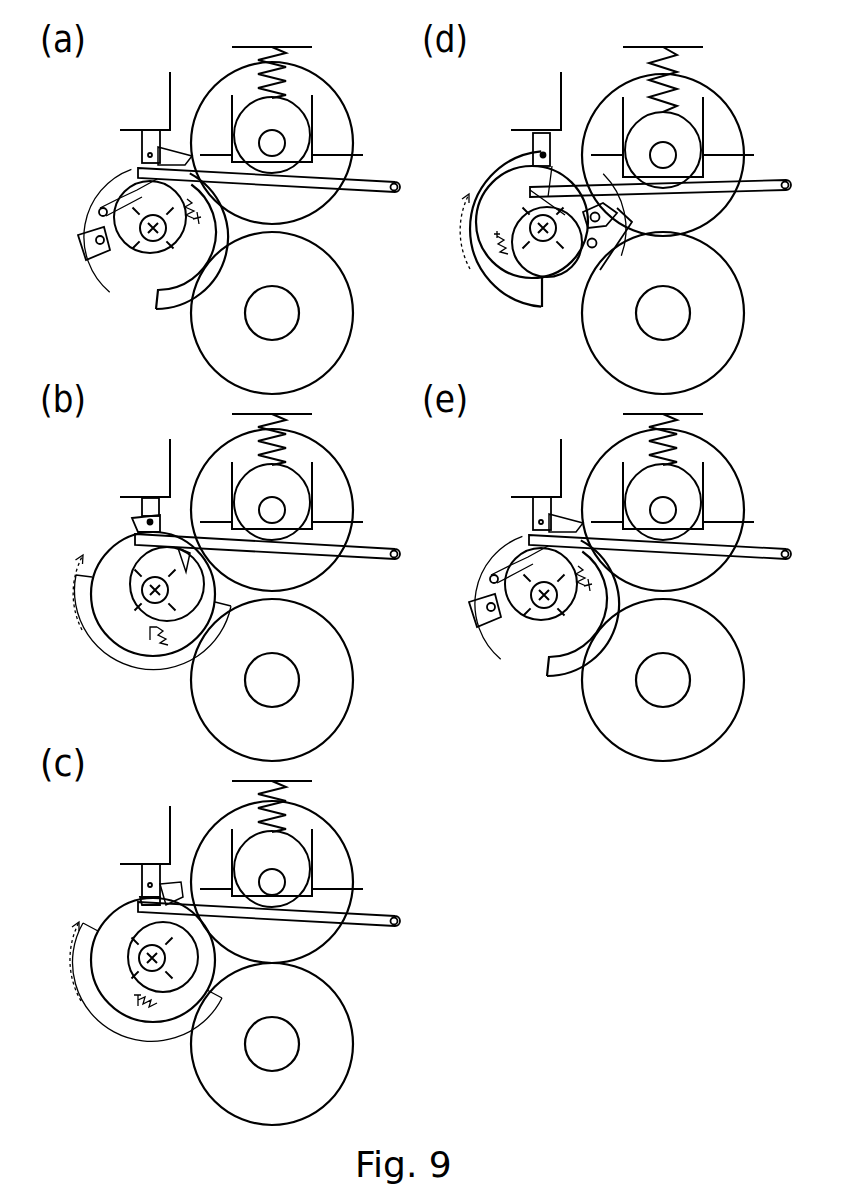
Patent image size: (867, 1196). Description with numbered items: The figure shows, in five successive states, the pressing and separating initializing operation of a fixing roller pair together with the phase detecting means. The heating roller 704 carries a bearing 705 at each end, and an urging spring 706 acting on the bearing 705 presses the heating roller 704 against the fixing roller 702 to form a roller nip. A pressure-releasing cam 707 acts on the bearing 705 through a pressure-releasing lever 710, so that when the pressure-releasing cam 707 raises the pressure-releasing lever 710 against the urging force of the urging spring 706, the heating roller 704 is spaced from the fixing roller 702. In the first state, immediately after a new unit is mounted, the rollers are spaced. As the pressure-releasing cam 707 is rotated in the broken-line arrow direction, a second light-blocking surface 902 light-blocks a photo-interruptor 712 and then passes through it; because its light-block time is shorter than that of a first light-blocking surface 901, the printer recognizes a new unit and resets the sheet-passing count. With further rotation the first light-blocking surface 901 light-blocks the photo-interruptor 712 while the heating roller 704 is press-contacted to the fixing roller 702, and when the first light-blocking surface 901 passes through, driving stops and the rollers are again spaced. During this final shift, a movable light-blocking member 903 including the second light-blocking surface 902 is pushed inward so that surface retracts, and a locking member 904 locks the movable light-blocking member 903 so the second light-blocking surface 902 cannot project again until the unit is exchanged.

The fixing roller 702 is at (218, 358).
The heating roller 704 is at (307, 203).
The bearing 705 is at (287, 125).
The urging spring 706 is at (287, 83).
The pressure-releasing cam 707 is at (110, 240).
The pressure-releasing lever 710 is at (305, 210).
The photo-interruptor 712 is at (153, 137).
The first light-blocking surface 901 is at (140, 167).
The second light-blocking surface 902 is at (130, 525).
The movable light-blocking member 903 is at (563, 213).
The locking member 904 is at (542, 305).